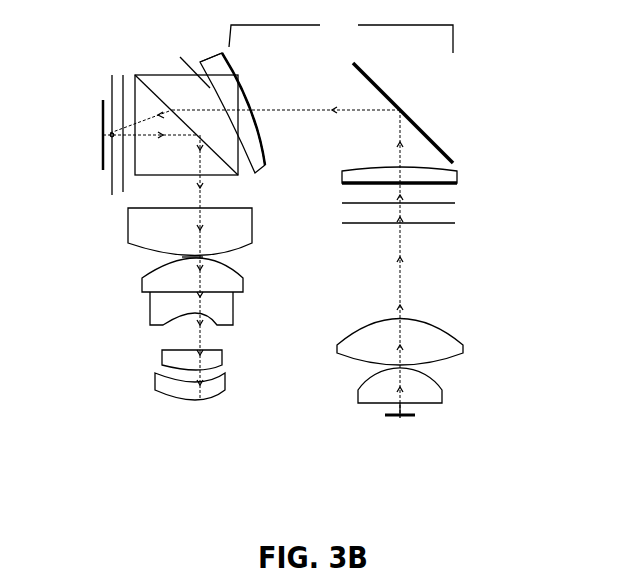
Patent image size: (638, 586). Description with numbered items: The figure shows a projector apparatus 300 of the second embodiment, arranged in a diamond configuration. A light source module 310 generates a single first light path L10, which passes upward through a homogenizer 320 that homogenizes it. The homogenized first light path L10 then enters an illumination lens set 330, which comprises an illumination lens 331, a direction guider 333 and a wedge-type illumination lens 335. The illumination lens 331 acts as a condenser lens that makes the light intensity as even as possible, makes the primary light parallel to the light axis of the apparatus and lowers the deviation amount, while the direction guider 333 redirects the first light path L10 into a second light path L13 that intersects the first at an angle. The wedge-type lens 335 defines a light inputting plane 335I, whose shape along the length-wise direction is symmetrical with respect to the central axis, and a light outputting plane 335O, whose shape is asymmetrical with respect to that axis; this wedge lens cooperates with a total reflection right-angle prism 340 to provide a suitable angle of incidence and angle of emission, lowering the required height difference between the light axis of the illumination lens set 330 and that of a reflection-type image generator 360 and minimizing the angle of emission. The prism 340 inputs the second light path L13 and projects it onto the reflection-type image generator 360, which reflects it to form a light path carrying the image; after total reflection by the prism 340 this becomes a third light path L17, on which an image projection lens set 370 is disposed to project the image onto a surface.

The projector apparatus 300 is at (298, 428).
The light source module 310 is at (431, 366).
The homogenizer 320 is at (428, 210).
The illumination lens set 330 is at (341, 32).
The illumination lens 331 is at (425, 177).
The direction guider 333 is at (395, 100).
The wedge-type illumination lens 335 is at (263, 166).
The light outputting plane 335O is at (193, 46).
The light inputting plane 335I is at (232, 68).
The total reflection right-angle prism 340 is at (161, 92).
The reflection-type image generator 360 is at (103, 113).
The image projection lens set 370 is at (118, 208).
The first light path L10 is at (402, 288).
The second light path L13 is at (310, 110).
The third light path L17 is at (232, 267).